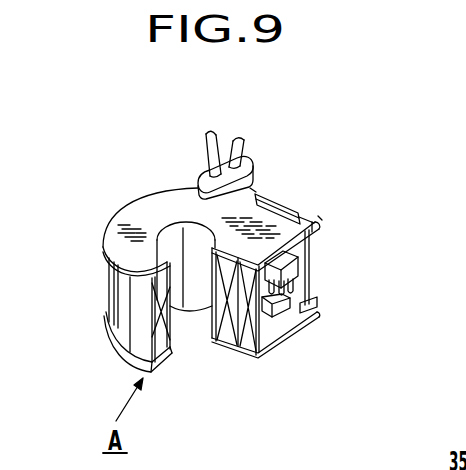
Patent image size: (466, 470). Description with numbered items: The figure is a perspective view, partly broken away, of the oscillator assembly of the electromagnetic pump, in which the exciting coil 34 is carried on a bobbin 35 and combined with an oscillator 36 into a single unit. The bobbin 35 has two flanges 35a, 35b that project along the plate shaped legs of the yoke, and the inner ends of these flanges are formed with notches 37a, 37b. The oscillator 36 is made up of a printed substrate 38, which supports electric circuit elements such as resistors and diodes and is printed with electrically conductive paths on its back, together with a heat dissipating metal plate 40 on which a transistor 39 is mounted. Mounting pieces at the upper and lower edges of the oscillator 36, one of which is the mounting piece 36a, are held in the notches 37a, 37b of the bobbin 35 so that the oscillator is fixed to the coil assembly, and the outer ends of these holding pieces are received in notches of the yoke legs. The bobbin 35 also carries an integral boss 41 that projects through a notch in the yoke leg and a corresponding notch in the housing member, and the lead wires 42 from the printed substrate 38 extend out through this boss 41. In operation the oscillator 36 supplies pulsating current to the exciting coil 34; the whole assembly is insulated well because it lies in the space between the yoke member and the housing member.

The exciting coil 34 is at (226, 333).
The bobbin 35 is at (118, 232).
The flange 35a is at (320, 225).
The flange 35b is at (300, 331).
The oscillator 36 is at (307, 200).
The mounting piece 36a is at (285, 202).
The notch 37a is at (311, 218).
The notch 37b is at (313, 306).
The printed substrate 38 is at (264, 305).
The transistor 39 is at (296, 278).
The heat dissipating metal plate 40 is at (298, 262).
The boss 41 is at (244, 165).
The lead wires 42 is at (206, 140).